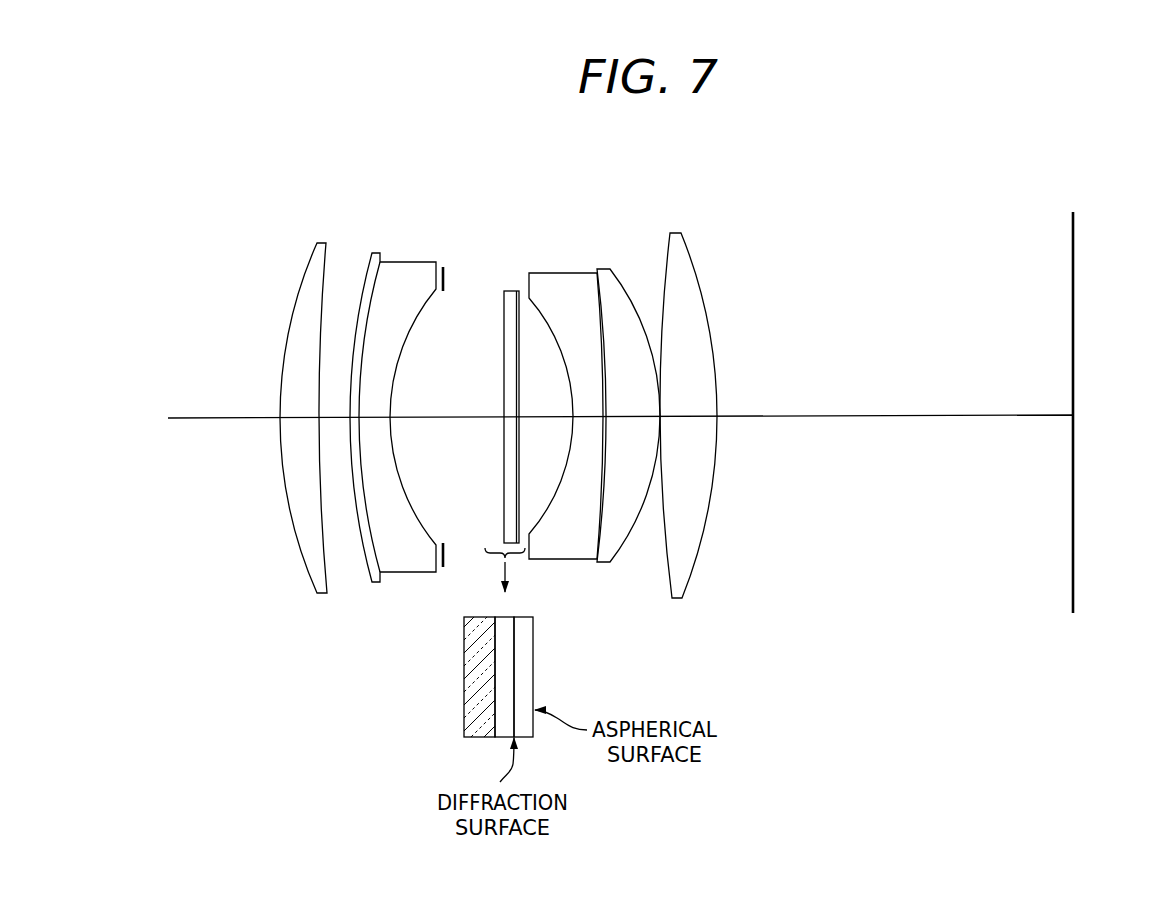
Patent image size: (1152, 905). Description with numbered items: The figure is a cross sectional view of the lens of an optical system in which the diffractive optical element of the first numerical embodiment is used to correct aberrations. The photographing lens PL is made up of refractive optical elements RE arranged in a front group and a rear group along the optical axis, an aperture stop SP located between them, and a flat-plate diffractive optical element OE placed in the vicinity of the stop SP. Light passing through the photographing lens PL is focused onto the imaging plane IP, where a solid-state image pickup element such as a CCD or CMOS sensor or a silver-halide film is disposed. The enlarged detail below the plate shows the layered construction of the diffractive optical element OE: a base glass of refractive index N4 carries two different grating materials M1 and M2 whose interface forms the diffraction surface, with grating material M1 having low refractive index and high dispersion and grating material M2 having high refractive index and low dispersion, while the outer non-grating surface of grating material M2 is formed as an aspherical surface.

The photographing lens PL is at (613, 168).
The refractive optical element RE is at (442, 220).
The aperture stop SP is at (445, 277).
The diffractive optical element OE is at (512, 297).
The imaging plane IP is at (1073, 258).
The grating material M1 is at (502, 645).
The grating material M2 is at (525, 643).
The refractive index of base glass N4 is at (470, 690).